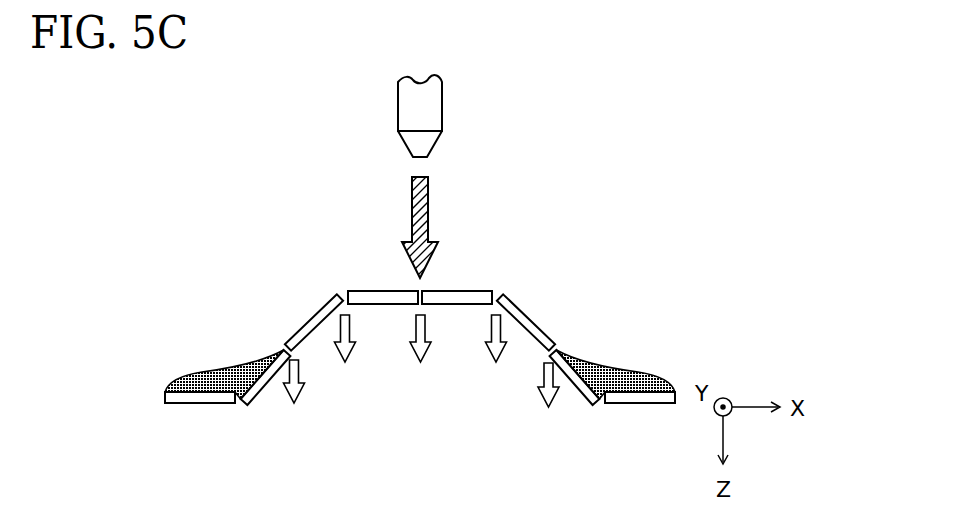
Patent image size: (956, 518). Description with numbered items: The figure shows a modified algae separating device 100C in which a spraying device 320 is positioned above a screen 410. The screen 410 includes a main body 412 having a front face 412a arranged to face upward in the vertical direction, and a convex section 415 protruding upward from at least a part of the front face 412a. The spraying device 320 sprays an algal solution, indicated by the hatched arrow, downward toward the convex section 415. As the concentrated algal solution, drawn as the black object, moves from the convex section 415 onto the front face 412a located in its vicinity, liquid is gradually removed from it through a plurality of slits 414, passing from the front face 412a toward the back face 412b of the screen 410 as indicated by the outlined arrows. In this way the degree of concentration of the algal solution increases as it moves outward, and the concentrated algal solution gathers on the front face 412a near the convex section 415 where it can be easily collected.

The spraying device 320 is at (443, 97).
The algae separating device 100C is at (751, 186).
The screen 410 is at (725, 311).
The main body 412 is at (645, 404).
The front face 412a is at (297, 322).
The back face 412b is at (273, 383).
The slits 414 is at (342, 295).
The convex section 415 is at (533, 322).